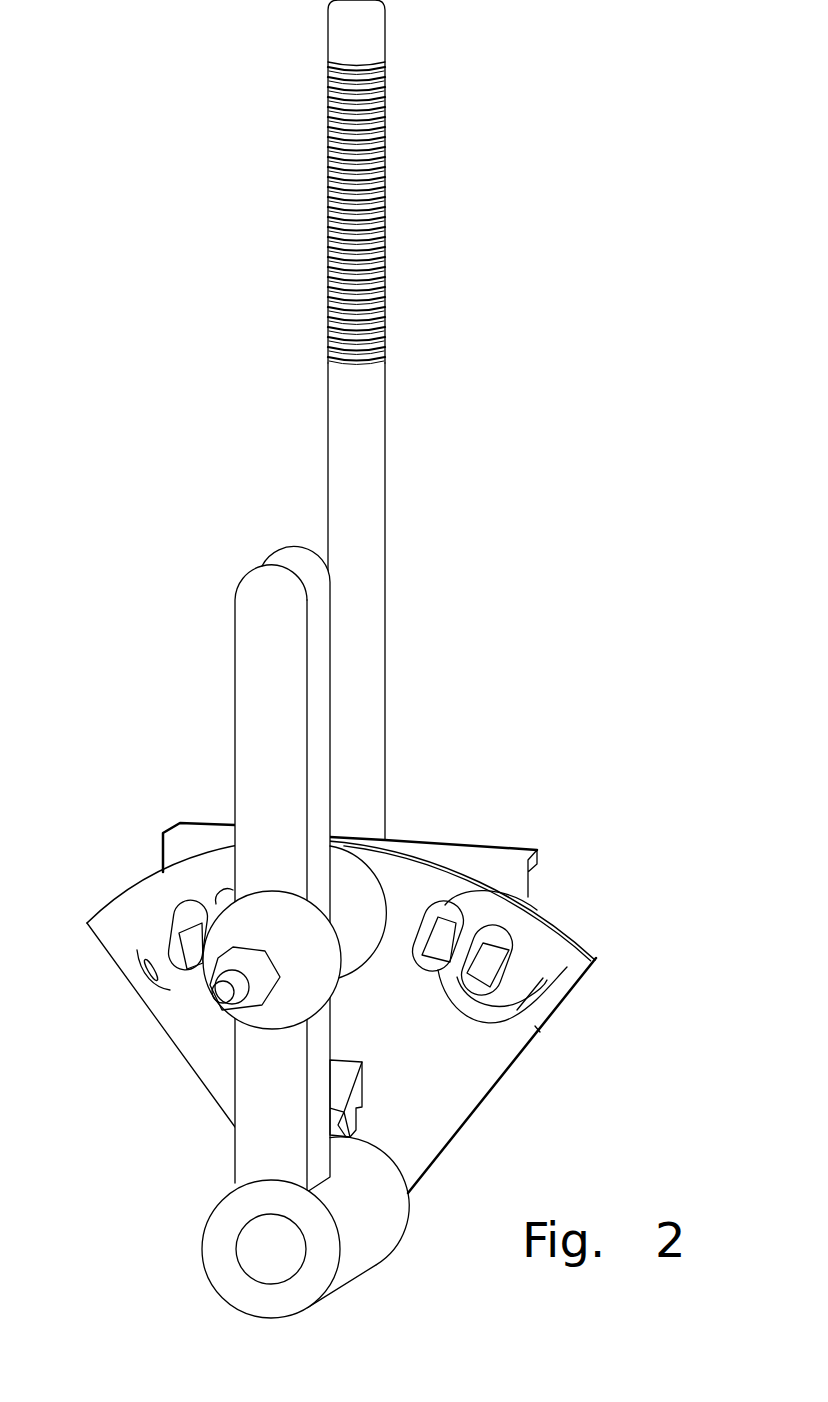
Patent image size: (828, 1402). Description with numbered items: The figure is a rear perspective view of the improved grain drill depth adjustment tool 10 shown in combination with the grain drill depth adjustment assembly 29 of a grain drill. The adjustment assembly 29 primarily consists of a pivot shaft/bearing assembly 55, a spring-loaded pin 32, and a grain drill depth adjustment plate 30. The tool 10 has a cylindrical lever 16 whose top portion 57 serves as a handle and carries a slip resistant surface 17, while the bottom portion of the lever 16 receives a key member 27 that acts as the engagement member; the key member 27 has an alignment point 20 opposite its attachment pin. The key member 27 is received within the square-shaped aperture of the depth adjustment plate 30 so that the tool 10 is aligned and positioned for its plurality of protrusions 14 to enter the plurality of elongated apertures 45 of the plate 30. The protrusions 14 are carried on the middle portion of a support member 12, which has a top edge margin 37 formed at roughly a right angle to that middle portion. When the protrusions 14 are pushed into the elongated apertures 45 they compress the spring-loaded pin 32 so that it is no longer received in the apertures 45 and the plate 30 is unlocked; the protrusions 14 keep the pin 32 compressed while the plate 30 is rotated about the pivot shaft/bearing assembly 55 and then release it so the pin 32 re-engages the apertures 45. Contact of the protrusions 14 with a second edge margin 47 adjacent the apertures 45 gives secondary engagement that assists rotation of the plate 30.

The improved grain drill depth adjustment tool 10 is at (457, 510).
The support member 12 is at (527, 880).
The plurality of protrusions 14 is at (573, 988).
The lever 16 is at (345, 502).
The slip resistant surface 17 is at (385, 297).
The top portion 57 is at (363, 400).
The alignment point 20 is at (348, 1137).
The key member 27 is at (343, 1083).
The grain drill depth adjustment assembly 29 is at (217, 1168).
The grain drill depth adjustment plate 30 is at (447, 1120).
The spring-loaded pin 32 is at (218, 993).
The top edge margin 37 is at (538, 856).
The plurality of elongated apertures 45 is at (447, 937).
The slot 47 is at (498, 902).
The pivot shaft/bearing assembly 55 is at (397, 1277).